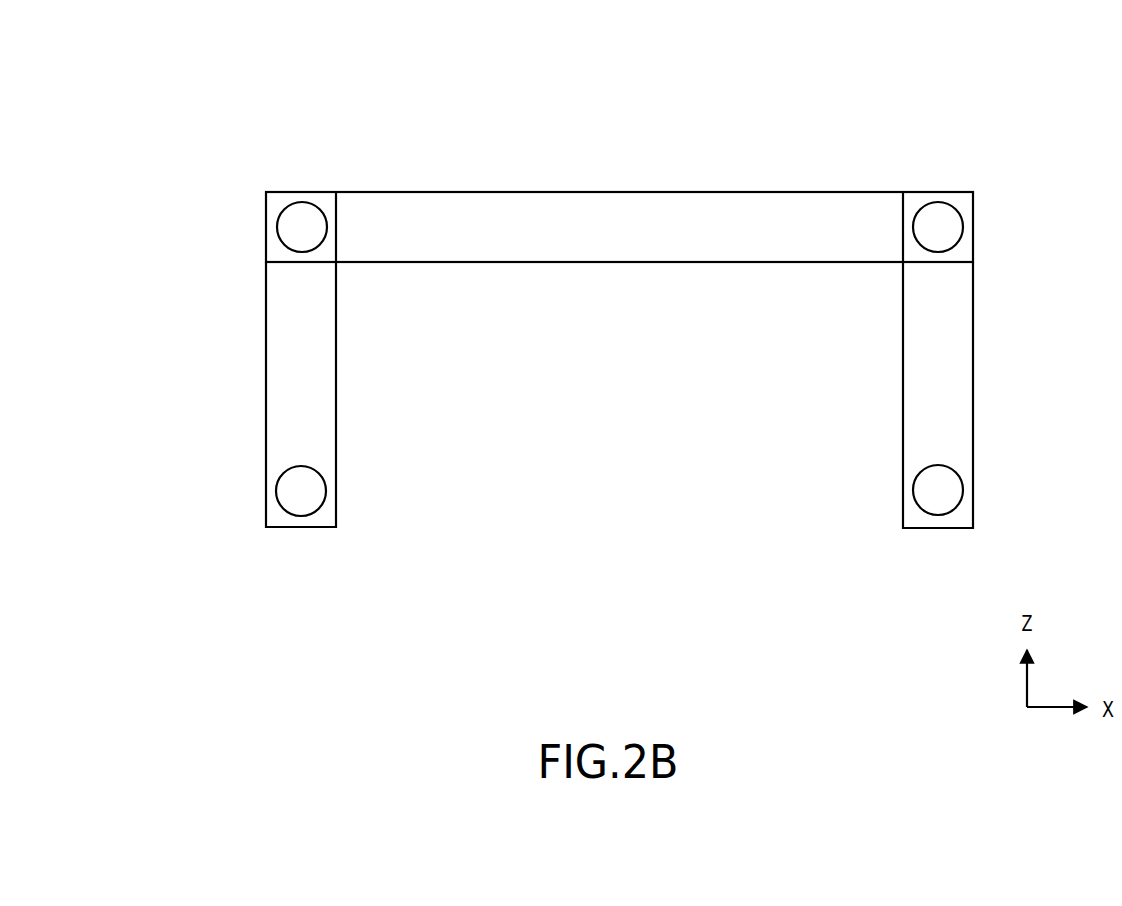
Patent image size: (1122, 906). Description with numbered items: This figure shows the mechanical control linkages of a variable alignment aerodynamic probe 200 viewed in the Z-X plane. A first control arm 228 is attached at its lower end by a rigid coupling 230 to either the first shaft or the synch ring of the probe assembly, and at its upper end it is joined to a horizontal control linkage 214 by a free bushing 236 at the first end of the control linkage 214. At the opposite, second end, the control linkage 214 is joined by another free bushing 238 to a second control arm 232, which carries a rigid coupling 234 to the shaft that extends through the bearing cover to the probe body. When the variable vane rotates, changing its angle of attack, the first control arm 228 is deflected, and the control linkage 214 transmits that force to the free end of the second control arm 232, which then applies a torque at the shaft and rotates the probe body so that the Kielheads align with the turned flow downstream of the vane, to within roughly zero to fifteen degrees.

The variable alignment aerodynamic probe 200 is at (210, 92).
The control linkage 214 is at (612, 208).
The first control arm 228 is at (319, 402).
The second control arm 232 is at (962, 363).
The rigid coupling 230 is at (315, 488).
The rigid coupling 234 is at (948, 490).
The free bushing 236 is at (305, 217).
The free bushing 238 is at (948, 219).